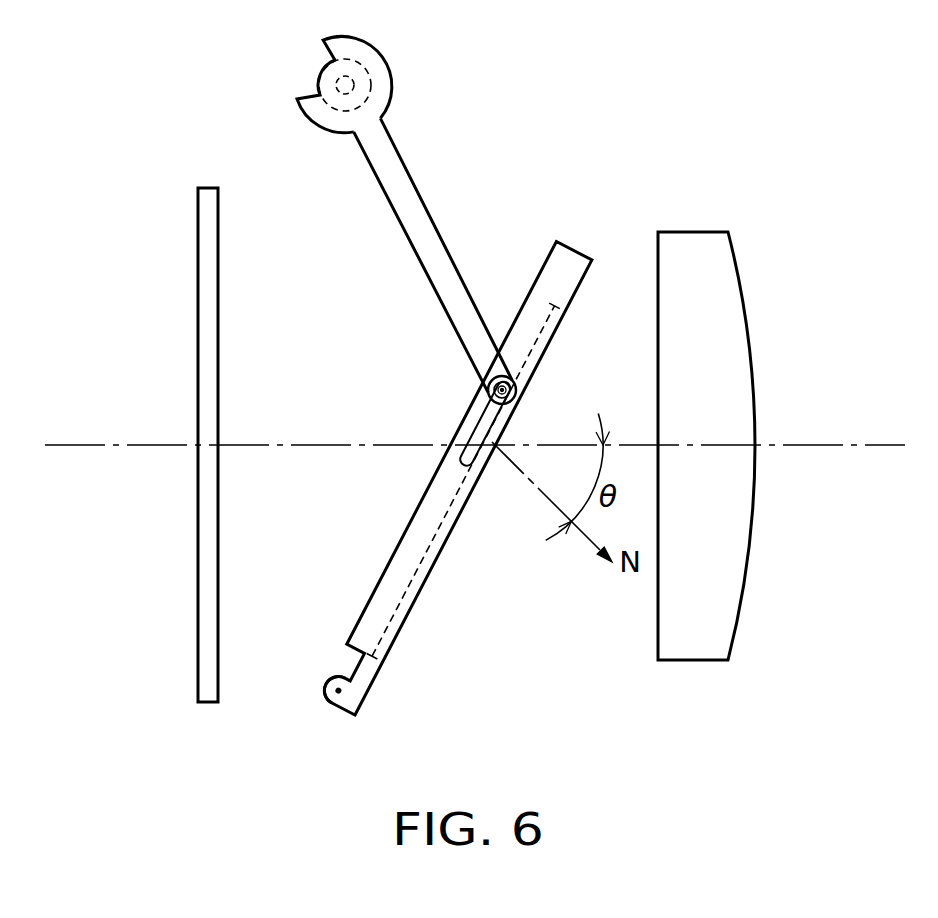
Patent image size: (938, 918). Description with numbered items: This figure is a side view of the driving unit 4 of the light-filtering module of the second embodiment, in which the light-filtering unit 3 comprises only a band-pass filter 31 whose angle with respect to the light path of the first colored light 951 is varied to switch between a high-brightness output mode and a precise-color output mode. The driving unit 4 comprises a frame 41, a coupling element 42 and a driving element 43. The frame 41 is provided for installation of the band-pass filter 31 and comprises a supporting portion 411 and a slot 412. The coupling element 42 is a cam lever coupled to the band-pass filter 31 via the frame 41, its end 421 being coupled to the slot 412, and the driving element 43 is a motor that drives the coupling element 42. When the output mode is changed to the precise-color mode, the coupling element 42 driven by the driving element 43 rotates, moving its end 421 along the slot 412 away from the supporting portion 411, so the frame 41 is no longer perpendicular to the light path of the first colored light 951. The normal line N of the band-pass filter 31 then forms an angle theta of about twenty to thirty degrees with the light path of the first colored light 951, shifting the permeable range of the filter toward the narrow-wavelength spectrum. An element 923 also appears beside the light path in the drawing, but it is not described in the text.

The driving unit 4 is at (512, 102).
The driving element 43 is at (336, 83).
The coupling element 42 is at (407, 168).
The frame 41 is at (567, 252).
The end 421 is at (489, 379).
The slot 412 is at (474, 420).
The supporting portion 411 is at (333, 701).
The band-pass filter 31 is at (417, 583).
The light-filtering unit 3 is at (452, 661).
The display panel 923 is at (200, 237).
The first colored light 951 is at (887, 441).